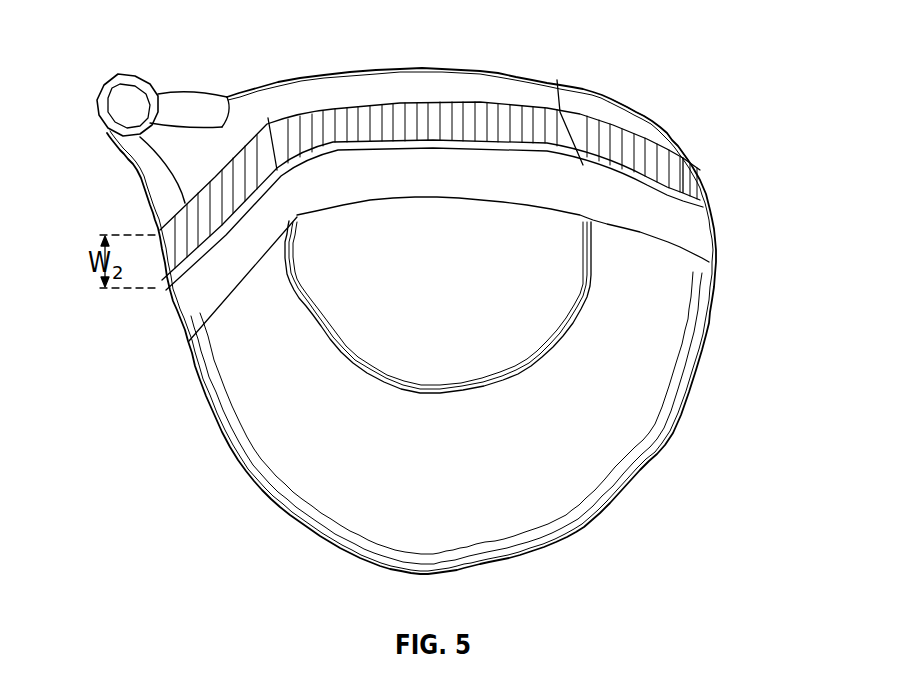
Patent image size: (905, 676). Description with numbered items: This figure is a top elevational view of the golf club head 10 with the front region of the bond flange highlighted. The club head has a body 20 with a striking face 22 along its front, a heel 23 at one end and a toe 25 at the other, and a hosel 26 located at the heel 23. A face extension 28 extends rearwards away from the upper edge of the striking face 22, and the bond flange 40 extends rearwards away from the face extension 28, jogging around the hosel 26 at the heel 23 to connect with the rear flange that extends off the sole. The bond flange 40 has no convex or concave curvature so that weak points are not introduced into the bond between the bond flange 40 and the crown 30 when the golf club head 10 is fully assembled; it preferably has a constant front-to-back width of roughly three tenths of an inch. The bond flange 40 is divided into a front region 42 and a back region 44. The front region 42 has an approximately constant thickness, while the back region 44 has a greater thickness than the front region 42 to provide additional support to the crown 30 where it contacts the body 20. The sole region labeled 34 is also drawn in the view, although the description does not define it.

The golf club head 10 is at (660, 78).
The body 20 is at (267, 85).
The striking face 22 is at (403, 70).
The heel 23 is at (140, 181).
The toe 25 is at (661, 123).
The hosel 26 is at (116, 90).
The face extension 28 is at (530, 95).
The crown 30 is at (617, 358).
The sole band 34 is at (700, 232).
The bond flange 40 is at (683, 143).
The front region 42 is at (682, 164).
The back region 44 is at (178, 280).